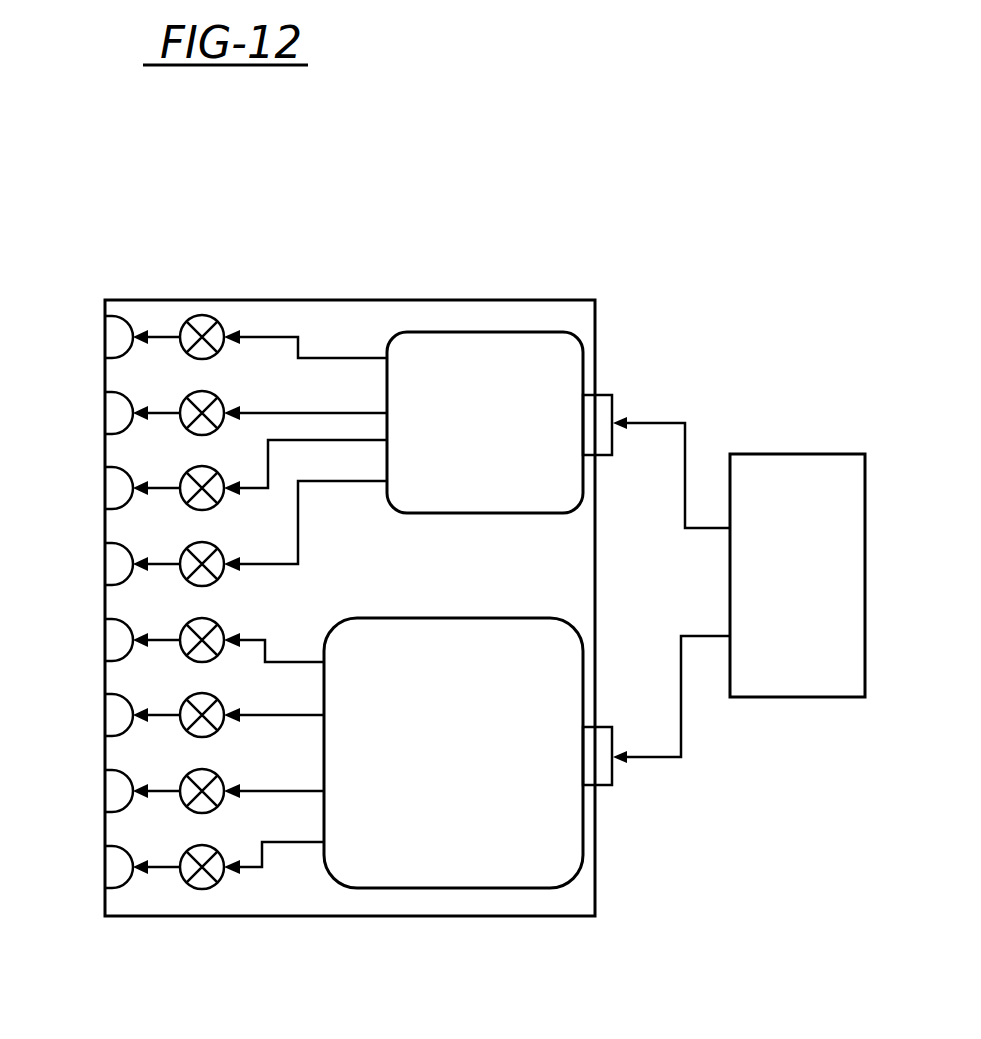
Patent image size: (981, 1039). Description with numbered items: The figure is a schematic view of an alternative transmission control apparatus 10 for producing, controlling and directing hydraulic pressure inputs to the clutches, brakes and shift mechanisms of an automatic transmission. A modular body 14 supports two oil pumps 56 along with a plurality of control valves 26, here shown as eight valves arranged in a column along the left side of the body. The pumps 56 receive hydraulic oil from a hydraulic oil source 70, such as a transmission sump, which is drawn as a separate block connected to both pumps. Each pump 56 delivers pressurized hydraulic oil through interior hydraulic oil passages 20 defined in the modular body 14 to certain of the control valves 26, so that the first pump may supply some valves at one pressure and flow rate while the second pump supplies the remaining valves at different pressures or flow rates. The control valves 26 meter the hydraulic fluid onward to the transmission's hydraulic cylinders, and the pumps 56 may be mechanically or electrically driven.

The transmission control apparatus 10 is at (523, 200).
The modular body 14 is at (393, 312).
The hydraulic oil passages 20 is at (262, 413).
The control valves 26 is at (203, 313).
The oil pump 56 is at (533, 340).
The hydraulic oil source 70 is at (795, 462).